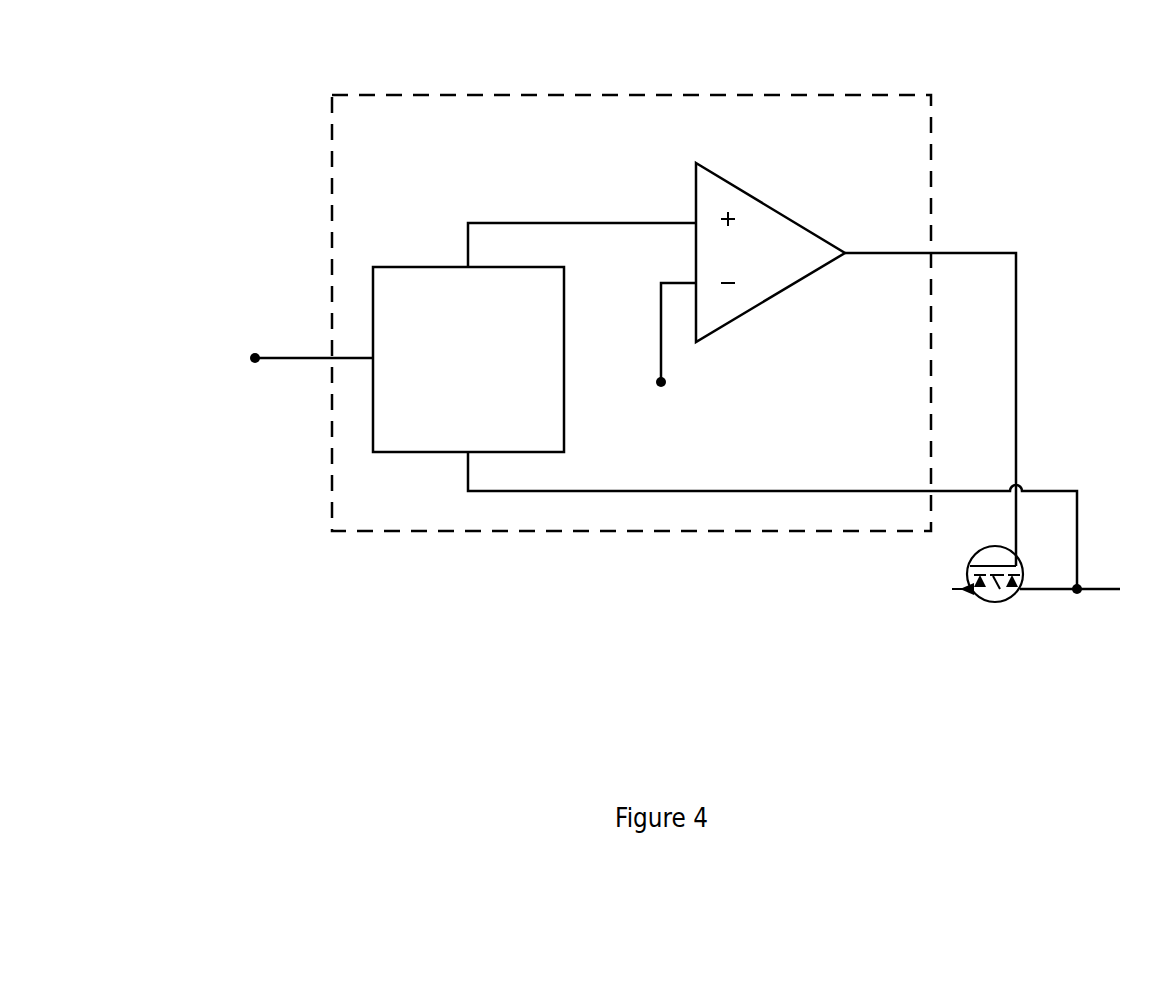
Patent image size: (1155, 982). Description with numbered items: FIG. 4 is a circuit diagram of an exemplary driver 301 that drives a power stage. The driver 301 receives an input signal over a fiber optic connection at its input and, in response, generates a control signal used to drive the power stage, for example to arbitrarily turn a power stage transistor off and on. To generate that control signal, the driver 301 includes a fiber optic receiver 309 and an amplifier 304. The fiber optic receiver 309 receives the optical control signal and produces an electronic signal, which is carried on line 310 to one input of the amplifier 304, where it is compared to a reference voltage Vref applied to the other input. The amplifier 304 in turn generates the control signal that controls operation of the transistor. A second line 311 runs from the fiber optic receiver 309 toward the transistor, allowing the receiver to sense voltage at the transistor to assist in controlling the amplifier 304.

The driver 301 is at (874, 170).
The fiber optic receiver 309 is at (489, 403).
The receiver output line to comparator 310 is at (521, 218).
The amplifier 304 is at (779, 302).
The receiver output line to switch 311 is at (642, 498).